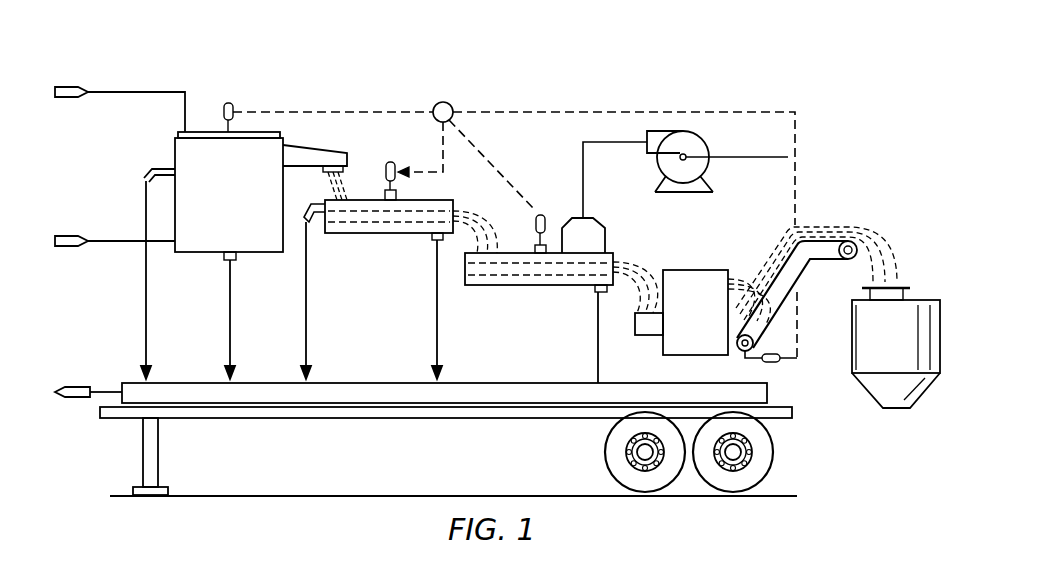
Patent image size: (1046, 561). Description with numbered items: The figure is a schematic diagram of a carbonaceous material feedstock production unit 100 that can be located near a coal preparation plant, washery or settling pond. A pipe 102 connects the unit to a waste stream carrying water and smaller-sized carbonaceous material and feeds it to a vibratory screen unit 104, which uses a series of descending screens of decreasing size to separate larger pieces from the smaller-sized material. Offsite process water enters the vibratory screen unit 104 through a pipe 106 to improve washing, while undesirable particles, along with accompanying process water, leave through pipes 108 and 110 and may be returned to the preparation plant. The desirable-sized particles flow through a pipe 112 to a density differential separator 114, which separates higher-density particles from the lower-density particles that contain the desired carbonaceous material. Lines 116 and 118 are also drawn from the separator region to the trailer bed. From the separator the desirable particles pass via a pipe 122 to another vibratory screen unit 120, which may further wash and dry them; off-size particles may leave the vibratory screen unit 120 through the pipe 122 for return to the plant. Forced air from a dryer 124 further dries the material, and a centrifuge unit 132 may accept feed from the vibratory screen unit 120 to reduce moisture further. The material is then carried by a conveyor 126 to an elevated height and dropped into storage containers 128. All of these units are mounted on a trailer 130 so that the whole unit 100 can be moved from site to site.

The carbonaceous material feedstock production unit 100 is at (666, 60).
The pipe 102 is at (130, 88).
The vibratory screen unit 104 is at (248, 198).
The pipe 106 is at (112, 238).
The pipe 108 is at (229, 328).
The pipe 110 is at (146, 306).
The pipe 112 is at (313, 133).
The density differential separator 114 is at (372, 237).
The first unit inlet conduit 116 is at (306, 306).
The first unit outlet conduit 118 is at (437, 343).
The vibratory screen unit 120 is at (518, 288).
The pipe 122 is at (485, 220).
The dryer 124 is at (693, 193).
The conveyor 126 is at (828, 258).
The storage containers 128 is at (917, 298).
The trailer 130 is at (367, 418).
The centrifuge unit 132 is at (713, 322).